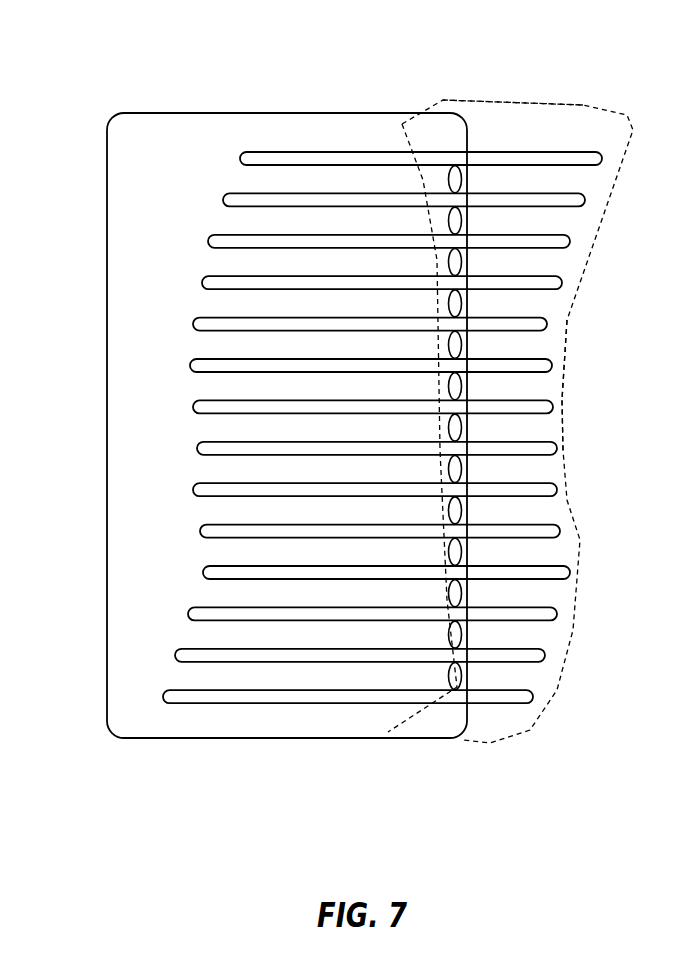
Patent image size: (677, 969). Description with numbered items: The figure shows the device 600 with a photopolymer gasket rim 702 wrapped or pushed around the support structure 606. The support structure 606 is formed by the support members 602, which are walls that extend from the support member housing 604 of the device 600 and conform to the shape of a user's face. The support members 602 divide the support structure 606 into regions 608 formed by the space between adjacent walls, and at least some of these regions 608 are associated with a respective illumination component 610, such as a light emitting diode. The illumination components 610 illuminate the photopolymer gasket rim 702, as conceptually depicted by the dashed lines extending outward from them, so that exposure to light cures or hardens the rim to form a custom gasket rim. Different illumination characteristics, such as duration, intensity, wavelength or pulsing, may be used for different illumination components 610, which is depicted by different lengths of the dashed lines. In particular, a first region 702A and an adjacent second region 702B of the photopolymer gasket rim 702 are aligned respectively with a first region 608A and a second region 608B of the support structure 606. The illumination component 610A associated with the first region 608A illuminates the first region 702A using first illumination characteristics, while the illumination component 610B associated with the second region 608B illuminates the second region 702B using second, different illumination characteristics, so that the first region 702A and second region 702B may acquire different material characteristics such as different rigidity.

The device 600 is at (120, 93).
The support members 602 is at (200, 532).
The support member housing 604 is at (223, 113).
The support structure 606 is at (524, 137).
The regions 608 is at (198, 467).
The first region 608A is at (199, 348).
The second region 608B is at (199, 388).
The illumination components 610 is at (446, 222).
The illumination component 610A is at (447, 348).
The illumination component 610B is at (447, 389).
The photopolymer gasket rim 702 is at (622, 113).
The first region 702A is at (557, 347).
The second region 702B is at (550, 389).